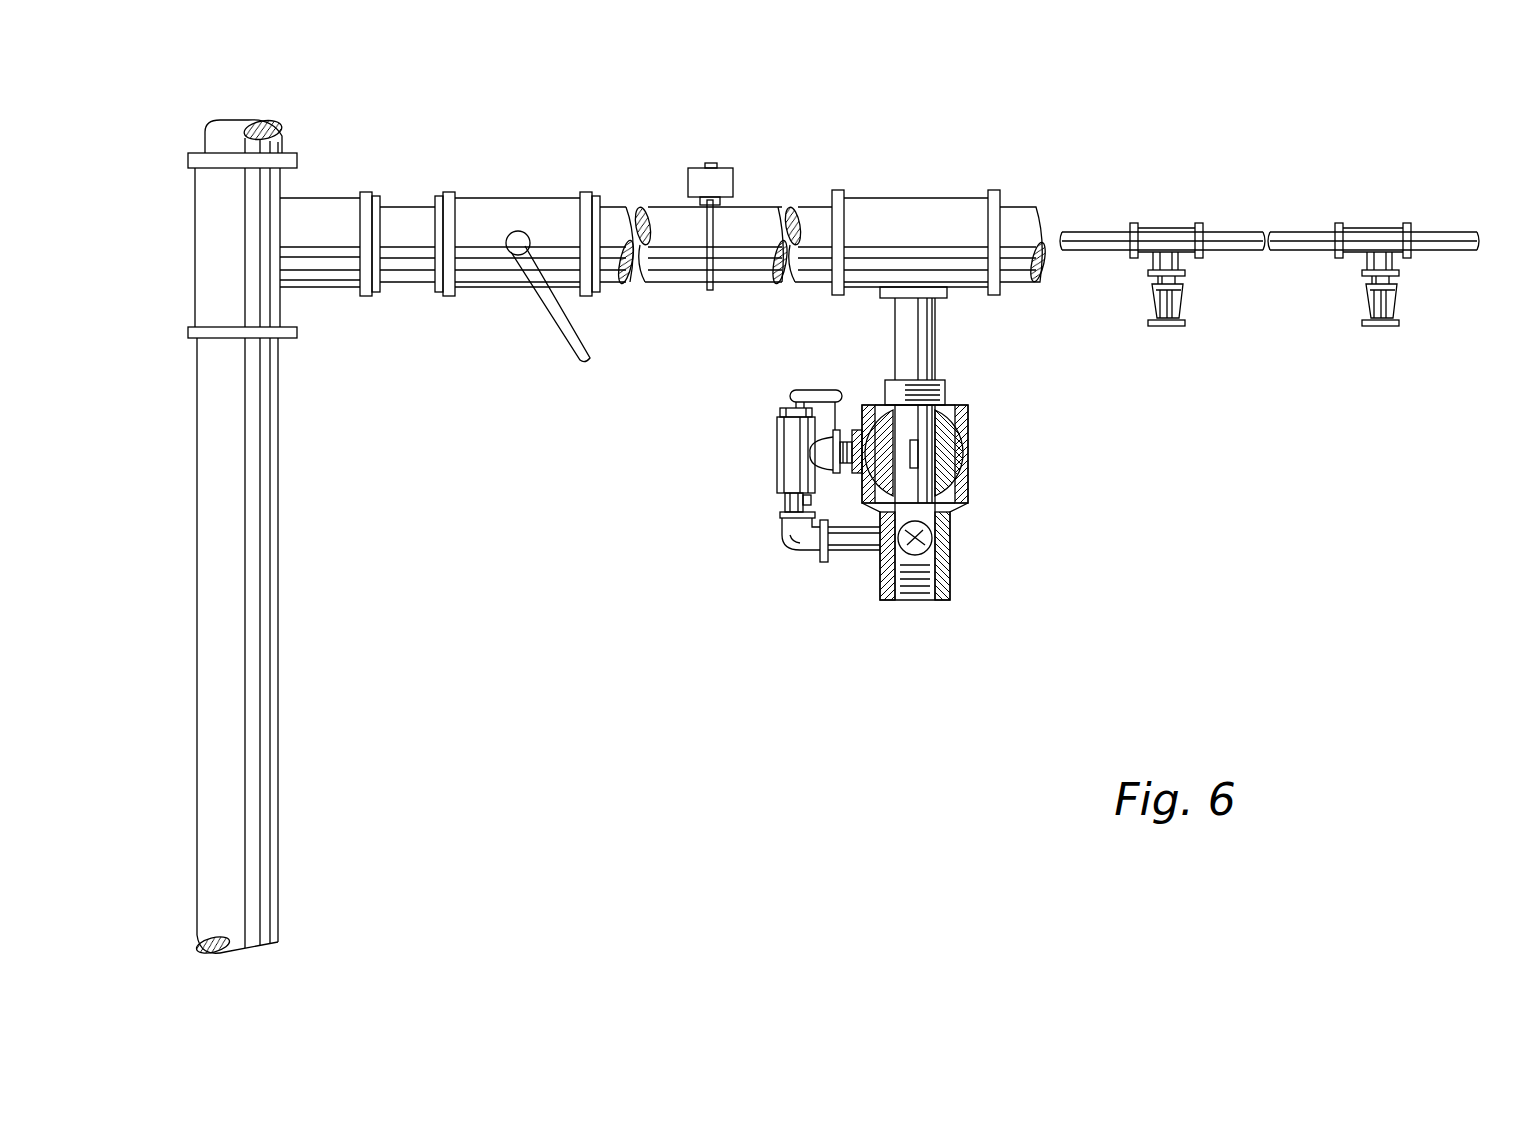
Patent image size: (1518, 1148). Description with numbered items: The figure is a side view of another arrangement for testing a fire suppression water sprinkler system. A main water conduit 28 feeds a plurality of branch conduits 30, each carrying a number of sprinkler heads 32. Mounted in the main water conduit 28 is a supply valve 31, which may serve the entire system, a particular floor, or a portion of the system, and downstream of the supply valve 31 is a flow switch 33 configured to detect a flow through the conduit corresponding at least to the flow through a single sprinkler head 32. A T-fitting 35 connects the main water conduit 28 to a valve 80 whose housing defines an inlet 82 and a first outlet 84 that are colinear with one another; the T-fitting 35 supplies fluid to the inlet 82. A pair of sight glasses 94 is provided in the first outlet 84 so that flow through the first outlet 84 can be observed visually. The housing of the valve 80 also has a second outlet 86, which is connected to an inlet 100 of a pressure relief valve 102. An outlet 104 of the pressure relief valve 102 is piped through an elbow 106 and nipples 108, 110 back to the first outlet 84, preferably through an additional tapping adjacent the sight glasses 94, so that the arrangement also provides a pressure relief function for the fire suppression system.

The main water conduit 28 is at (405, 206).
The supply valve 31 is at (514, 205).
The flow switch 33 is at (733, 182).
The T-fitting 35 is at (917, 198).
The branch conduits 30 is at (1097, 230).
The sprinkler heads 32 is at (1185, 283).
The valve 80 is at (968, 434).
The inlet 82 is at (946, 384).
The first outlet 84 is at (950, 592).
The second outlet 86 is at (853, 428).
The sight glasses 94 is at (932, 538).
The inlet of pressure relief valve 100 is at (838, 390).
The pressure relief valve 102 is at (777, 452).
The outlet of pressure relief valve 104 is at (780, 500).
The elbow 106 is at (805, 555).
The nipple 108 is at (813, 500).
The nipple 110 is at (856, 555).